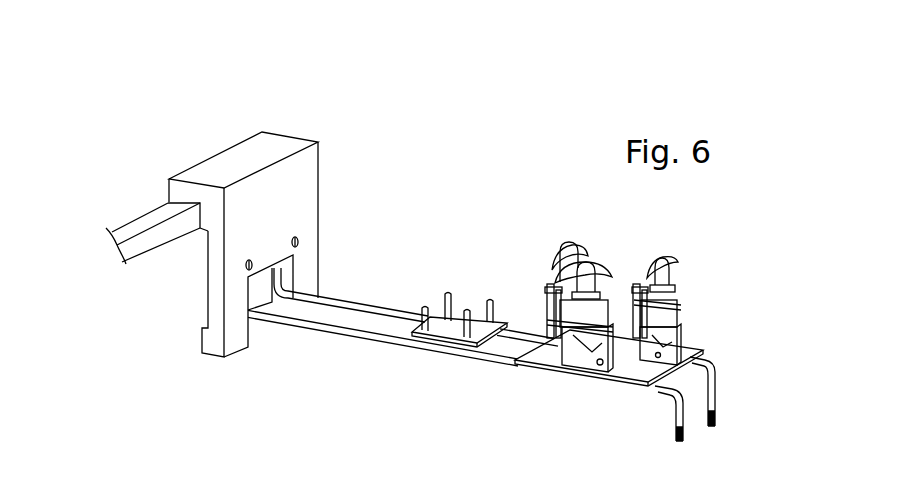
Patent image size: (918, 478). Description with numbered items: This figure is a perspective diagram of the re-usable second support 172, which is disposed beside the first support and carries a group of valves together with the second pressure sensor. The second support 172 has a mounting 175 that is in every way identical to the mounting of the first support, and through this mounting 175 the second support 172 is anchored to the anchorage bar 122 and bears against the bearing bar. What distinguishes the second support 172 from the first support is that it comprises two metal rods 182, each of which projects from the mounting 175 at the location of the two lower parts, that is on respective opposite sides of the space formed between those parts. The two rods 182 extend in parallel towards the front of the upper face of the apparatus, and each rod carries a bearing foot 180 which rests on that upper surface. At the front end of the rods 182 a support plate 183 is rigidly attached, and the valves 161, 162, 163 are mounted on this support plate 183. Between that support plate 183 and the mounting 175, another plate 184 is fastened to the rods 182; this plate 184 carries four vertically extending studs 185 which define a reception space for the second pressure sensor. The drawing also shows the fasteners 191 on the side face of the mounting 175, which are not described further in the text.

The second support 172 is at (246, 203).
The mounting 175 is at (196, 173).
The anchorage bar 122 is at (123, 231).
The fastening screws 191 is at (251, 260).
The metal rods 182 is at (352, 300).
The studs 185 is at (487, 298).
The plate 184 is at (445, 335).
The support plate 183 is at (547, 362).
The bearing foot 180 is at (676, 437).
The valve 161 is at (662, 260).
The valve 162 is at (586, 264).
The valve 163 is at (563, 245).